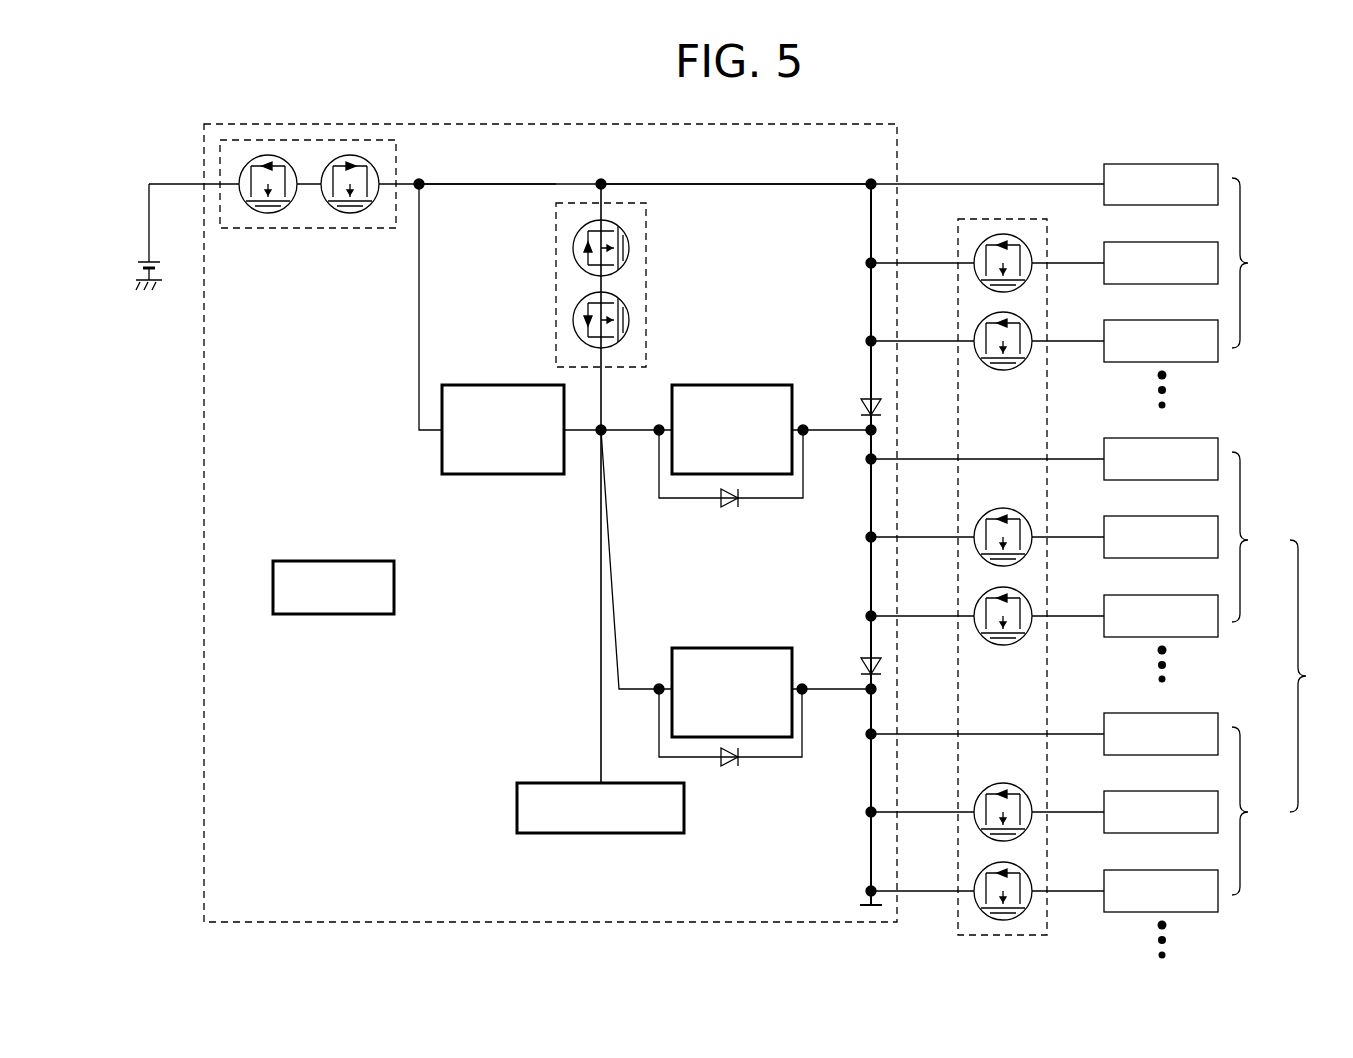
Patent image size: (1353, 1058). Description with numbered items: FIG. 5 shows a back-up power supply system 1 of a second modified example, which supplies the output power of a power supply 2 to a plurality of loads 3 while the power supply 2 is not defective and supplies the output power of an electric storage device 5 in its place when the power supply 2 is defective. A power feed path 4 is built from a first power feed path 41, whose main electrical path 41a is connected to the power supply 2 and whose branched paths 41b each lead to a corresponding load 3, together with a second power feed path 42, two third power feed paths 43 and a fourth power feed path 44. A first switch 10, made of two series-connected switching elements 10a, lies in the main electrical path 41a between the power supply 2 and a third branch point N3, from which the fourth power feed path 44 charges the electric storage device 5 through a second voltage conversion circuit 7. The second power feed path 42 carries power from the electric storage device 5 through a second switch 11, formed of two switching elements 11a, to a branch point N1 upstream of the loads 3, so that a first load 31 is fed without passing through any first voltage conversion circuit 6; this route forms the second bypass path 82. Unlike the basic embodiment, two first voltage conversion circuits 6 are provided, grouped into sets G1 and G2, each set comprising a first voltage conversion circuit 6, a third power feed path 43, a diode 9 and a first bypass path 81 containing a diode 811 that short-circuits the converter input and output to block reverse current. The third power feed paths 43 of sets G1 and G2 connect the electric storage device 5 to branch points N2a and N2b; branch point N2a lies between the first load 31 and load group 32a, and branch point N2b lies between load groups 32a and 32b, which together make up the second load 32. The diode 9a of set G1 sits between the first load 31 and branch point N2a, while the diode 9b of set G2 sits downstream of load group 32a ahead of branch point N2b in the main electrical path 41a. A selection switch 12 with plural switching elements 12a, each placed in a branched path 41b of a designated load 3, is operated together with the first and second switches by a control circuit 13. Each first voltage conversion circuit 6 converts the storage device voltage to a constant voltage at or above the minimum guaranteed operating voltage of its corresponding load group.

The back-up power supply system 1 is at (204, 882).
The power supply 2 is at (160, 270).
The loads 3 is at (1200, 164).
The power feed path 4 is at (566, 180).
The electric storage device 5 is at (566, 834).
The first voltage conversion circuit 6 is at (743, 384).
The second voltage conversion circuit 7 is at (467, 476).
The diode 9 is at (836, 506).
The diode 9a is at (866, 396).
The diode 9b is at (866, 655).
The first switch 10 is at (308, 227).
The switching elements 10a is at (265, 214).
The second switch 11 is at (609, 285).
The switching elements 11a is at (573, 252).
The selection switch 12 is at (1014, 587).
The switching elements 12a is at (978, 248).
The control circuit 13 is at (300, 560).
The first load 31 is at (1256, 263).
The second load 32 is at (1314, 676).
The load group 32a is at (1262, 537).
The load group 32b is at (1263, 811).
The first power feed path 41 is at (452, 190).
The main electrical path 41a is at (513, 190).
The branched paths 41b is at (1073, 184).
The second power feed path 42 is at (603, 404).
The third power feed path 43 is at (639, 436).
The fourth power feed path 44 is at (419, 332).
The first bypass path 81 is at (806, 462).
The second bypass path 82 is at (763, 184).
The diode 811 is at (724, 508).
The branch point N1 is at (603, 180).
The branch point N2a is at (868, 426).
The branch point N2b is at (868, 685).
The third branch point N3 is at (421, 180).
The set G1 is at (702, 381).
The set G2 is at (695, 644).